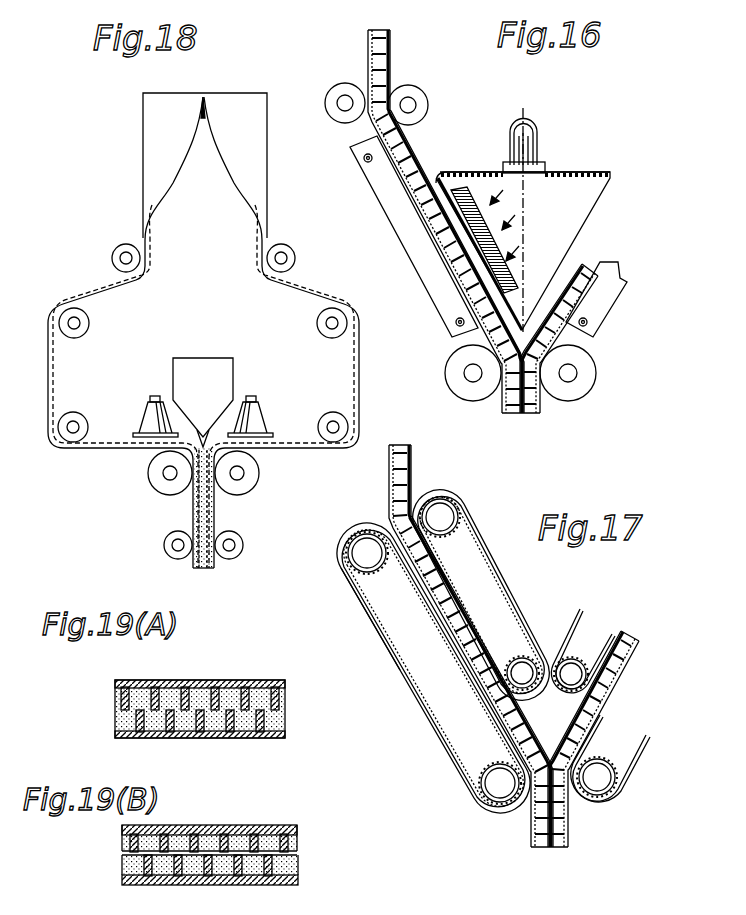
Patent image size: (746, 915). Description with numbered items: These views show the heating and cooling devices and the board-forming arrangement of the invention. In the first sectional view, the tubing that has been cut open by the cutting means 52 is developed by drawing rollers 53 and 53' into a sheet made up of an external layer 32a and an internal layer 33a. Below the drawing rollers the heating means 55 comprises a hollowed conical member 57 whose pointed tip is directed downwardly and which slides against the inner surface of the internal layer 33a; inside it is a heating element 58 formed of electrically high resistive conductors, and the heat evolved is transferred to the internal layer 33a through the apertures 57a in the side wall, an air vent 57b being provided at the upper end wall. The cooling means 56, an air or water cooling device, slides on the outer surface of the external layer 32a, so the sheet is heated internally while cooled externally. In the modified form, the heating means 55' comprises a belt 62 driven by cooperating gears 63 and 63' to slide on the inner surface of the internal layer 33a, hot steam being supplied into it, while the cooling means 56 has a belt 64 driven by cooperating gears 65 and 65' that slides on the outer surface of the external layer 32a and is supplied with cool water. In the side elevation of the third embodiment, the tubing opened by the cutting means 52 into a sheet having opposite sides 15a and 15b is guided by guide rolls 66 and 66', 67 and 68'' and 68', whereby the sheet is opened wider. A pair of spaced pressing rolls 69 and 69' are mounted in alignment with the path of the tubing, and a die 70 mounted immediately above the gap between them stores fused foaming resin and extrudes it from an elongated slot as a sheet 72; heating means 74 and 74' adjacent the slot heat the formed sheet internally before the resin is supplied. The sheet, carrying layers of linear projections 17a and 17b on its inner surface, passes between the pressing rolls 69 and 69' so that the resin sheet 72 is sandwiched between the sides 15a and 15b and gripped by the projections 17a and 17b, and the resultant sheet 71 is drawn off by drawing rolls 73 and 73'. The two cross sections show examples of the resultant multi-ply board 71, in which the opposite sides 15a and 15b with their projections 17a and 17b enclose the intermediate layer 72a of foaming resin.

In FIG. 19A, the side of the sheet 15a is at (133, 680).
In FIG. 19B, the side of the sheet 15a is at (242, 825).
In FIG. 19A, the side of the sheet 15b is at (137, 740).
In FIG. 19B, the side of the sheet 15b is at (125, 885).
In FIG. 19A, the layer of projections 17a is at (120, 697).
In FIG. 19B, the layer of projections 17a is at (125, 842).
In FIG. 19A, the layer of projections 17b is at (178, 733).
In FIG. 19B, the layer of projections 17b is at (125, 865).
In FIG. 16, the external layer 32a is at (350, 145).
In FIG. 17, the external layer 32a is at (391, 497).
In FIG. 16, the internal layer 33a is at (388, 60).
In FIG. 17, the internal layer 33a is at (413, 480).
In FIG. 18, the cutting means 52 is at (203, 118).
In FIG. 16, the drawing roller 53 is at (336, 86).
In FIG. 16, the drawing roller 53' is at (430, 87).
In FIG. 16, the heating means 55 is at (525, 148).
In FIG. 17, the heating means 55' is at (481, 591).
In FIG. 16, the cooling means 56 is at (415, 263).
In FIG. 17, the cooling means 56 is at (360, 603).
In FIG. 16, the conical member 57 is at (610, 192).
In FIG. 16, the apertures 57a is at (450, 192).
In FIG. 16, the valve pin 57b is at (535, 125).
In FIG. 16, the heating element 58 is at (524, 227).
In FIG. 17, the belt 62 is at (573, 623).
In FIG. 17, the gear 63 is at (449, 537).
In FIG. 17, the gear 63' is at (508, 654).
In FIG. 17, the belt 64 is at (455, 753).
In FIG. 17, the gear 65 is at (379, 575).
In FIG. 17, the gear 65' is at (487, 762).
In FIG. 18, the guide roll 66 is at (113, 241).
In FIG. 18, the guide roll 66' is at (299, 241).
In FIG. 18, the guide roll 67 is at (90, 323).
In FIG. 18, the guide roll 68' is at (323, 410).
In FIG. 18, the guide roller 68'' is at (85, 405).
In FIG. 18, the pressing roll 69 is at (152, 483).
In FIG. 18, the pressing roll 69' is at (253, 485).
In FIG. 18, the die 70 is at (200, 357).
In FIG. 19A, the resultant sheet 71 is at (247, 678).
In FIG. 18, the sheet of foaming resin 72 is at (198, 430).
In FIG. 18, the filler material 72a is at (213, 515).
In FIG. 19A, the filler material 72a is at (220, 723).
In FIG. 19B, the filler material 72a is at (265, 842).
In FIG. 18, the drawing roll 73 is at (162, 558).
In FIG. 18, the drawing roll 73' is at (246, 559).
In FIG. 18, the heating means 74 is at (151, 398).
In FIG. 18, the heating means 74' is at (255, 399).